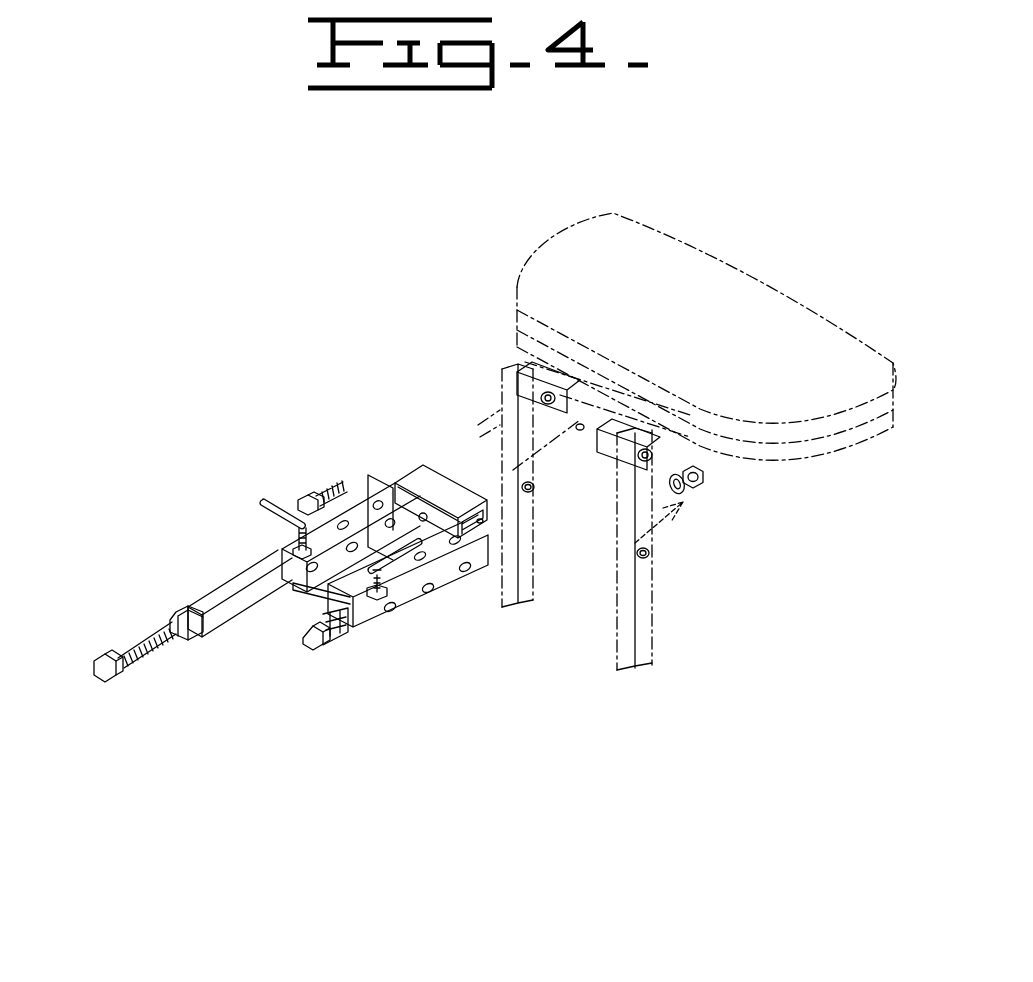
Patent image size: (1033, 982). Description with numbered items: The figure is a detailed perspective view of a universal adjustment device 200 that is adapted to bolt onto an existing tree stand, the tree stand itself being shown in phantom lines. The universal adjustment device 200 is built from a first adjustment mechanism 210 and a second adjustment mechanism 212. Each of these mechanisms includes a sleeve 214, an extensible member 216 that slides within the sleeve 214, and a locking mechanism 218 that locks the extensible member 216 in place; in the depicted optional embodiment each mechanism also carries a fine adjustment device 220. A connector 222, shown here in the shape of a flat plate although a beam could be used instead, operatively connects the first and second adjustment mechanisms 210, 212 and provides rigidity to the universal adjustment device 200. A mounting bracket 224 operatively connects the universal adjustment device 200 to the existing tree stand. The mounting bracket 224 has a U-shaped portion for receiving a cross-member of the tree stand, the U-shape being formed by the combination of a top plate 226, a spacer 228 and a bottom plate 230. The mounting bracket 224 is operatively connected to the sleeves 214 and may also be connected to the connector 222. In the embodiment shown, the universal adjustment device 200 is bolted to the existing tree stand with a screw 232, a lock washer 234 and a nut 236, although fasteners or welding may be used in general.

The universal adjustment device 200 is at (278, 758).
The first adjustment mechanism 210 is at (326, 562).
The second adjustment mechanism 212 is at (375, 628).
The sleeve 214 is at (395, 589).
The extensible member 216 is at (222, 585).
The locking mechanism 218 is at (275, 535).
The fine adjustment device 220 is at (145, 630).
The connector 222 is at (330, 593).
The mounting bracket 224 is at (430, 437).
The top plate 226 is at (410, 472).
The spacer 228 is at (387, 492).
The bottom plate 230 is at (474, 521).
The screw 232 is at (316, 490).
The lock washer 234 is at (683, 495).
The nut 236 is at (707, 482).